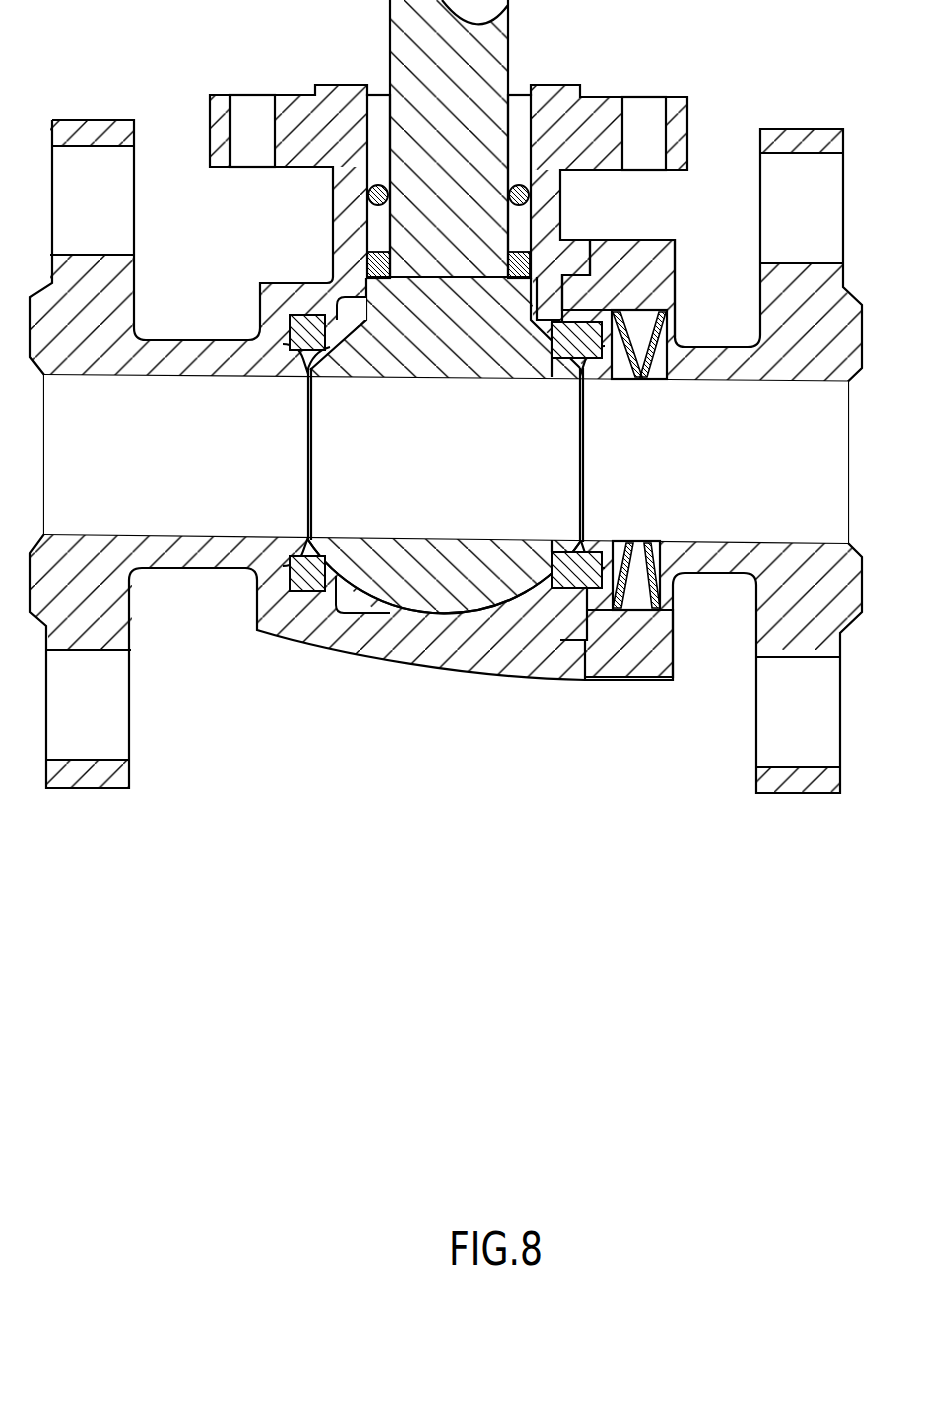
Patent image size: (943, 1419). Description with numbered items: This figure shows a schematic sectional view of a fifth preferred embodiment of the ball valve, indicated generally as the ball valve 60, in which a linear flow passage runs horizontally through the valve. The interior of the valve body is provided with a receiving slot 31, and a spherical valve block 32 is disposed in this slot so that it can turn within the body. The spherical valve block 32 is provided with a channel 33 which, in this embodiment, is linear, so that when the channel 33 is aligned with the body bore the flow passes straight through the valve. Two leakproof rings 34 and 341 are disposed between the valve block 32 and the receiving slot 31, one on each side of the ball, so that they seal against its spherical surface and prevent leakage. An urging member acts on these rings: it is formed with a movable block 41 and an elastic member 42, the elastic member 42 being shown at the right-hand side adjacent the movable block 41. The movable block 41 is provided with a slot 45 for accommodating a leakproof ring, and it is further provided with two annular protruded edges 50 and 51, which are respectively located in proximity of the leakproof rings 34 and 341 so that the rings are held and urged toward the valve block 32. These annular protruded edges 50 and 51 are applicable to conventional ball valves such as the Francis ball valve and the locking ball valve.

The ball valve 60 is at (408, 692).
The channel 33 is at (365, 477).
The spherical valve block 32 is at (470, 580).
The receiving slot 31 is at (353, 603).
The leakproof ring 341 is at (318, 338).
The annular protruded edge 51 is at (300, 548).
The leakproof ring 34 is at (570, 335).
The annular protruded edge 50 is at (585, 550).
The movable block 41 is at (607, 310).
The elastic member 42 is at (630, 312).
The slot 45 is at (612, 660).